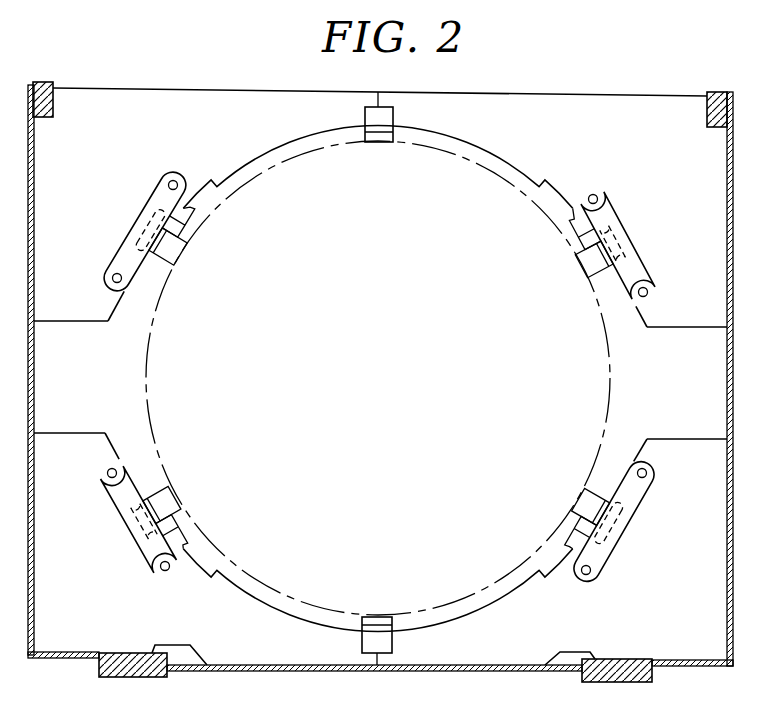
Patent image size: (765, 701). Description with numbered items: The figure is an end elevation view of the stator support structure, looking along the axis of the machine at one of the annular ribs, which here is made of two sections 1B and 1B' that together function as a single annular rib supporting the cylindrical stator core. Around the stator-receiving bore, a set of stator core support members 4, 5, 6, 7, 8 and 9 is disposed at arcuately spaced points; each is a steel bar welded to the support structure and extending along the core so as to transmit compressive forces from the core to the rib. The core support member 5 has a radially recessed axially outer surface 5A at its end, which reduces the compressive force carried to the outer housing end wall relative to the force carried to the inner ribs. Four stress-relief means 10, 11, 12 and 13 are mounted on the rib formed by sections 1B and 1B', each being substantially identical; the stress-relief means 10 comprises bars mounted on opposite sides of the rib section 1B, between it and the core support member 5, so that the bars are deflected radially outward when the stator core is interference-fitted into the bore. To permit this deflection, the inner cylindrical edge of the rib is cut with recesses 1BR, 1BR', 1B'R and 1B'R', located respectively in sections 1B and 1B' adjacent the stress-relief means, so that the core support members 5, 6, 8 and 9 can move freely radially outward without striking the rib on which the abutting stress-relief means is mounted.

The annular rib section 1B is at (420, 590).
The annular rib section 1B' is at (422, 166).
The recess 1BR is at (575, 496).
The recess 1BR' is at (211, 526).
The recess 1B'R is at (580, 271).
The recess 1B'R' is at (216, 224).
The stator core support member 4 is at (377, 617).
The stator core support member 5 is at (580, 498).
The radially recessed axially outer surface 5A is at (574, 508).
The stator core support member 6 is at (580, 258).
The stator core support member 7 is at (377, 146).
The stator core support member 8 is at (182, 257).
The stator core support member 9 is at (180, 493).
The stress-relief means 10 is at (629, 530).
The stress-relief means 11 is at (630, 239).
The stress-relief means 12 is at (131, 230).
The stress-relief means 13 is at (123, 526).